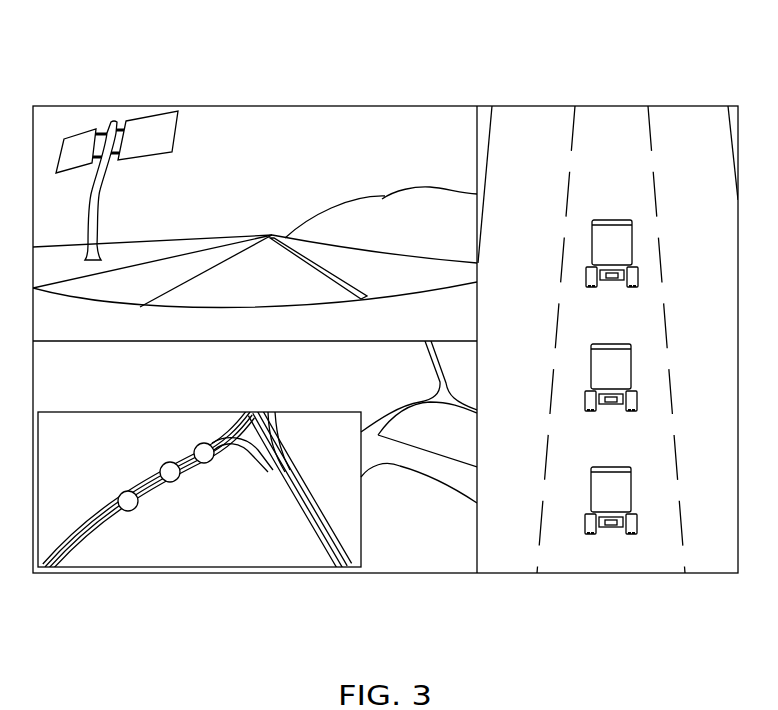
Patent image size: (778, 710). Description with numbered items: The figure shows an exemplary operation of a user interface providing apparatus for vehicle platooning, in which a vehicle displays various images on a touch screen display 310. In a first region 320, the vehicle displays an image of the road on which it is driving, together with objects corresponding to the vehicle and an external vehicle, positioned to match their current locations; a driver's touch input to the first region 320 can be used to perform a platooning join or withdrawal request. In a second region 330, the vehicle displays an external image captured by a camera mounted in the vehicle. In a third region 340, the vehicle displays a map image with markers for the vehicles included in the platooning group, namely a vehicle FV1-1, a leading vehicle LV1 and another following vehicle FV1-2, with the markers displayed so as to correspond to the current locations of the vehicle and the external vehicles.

The touch screen display 310 is at (710, 104).
The first region 320 is at (617, 134).
The second region 330 is at (305, 134).
The third region 340 is at (257, 488).
The vehicle FV1-1 is at (177, 486).
The another following vehicle FV1-2 is at (125, 515).
The leading vehicle LV1 is at (222, 463).